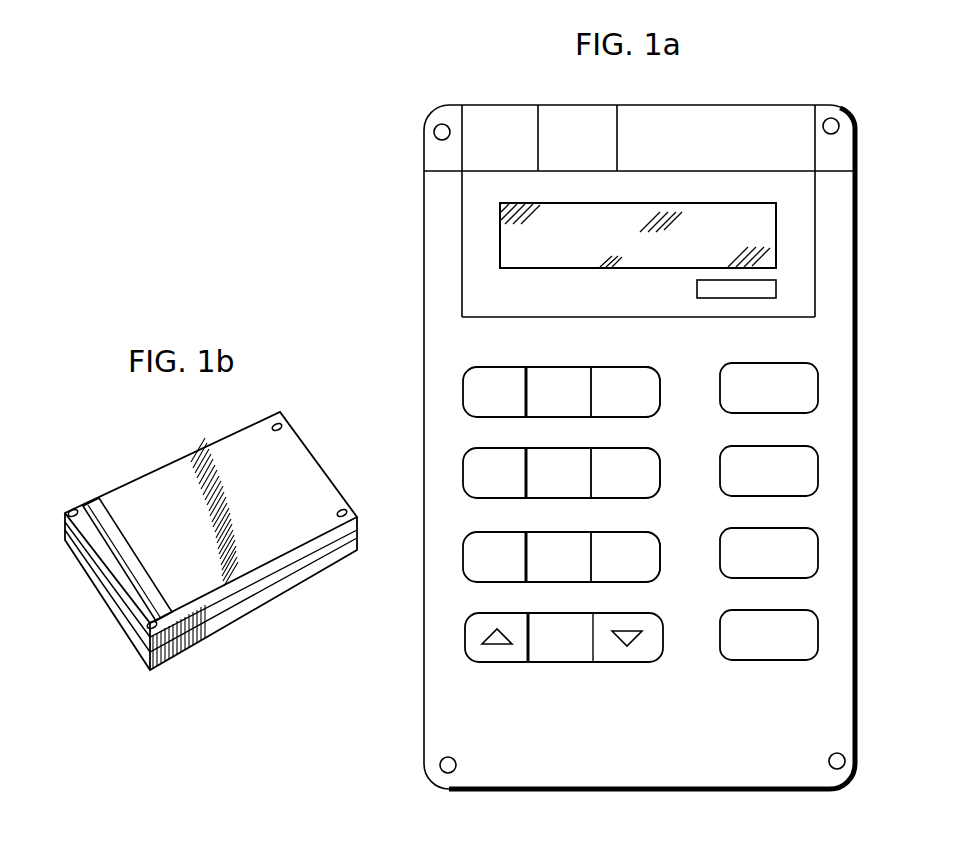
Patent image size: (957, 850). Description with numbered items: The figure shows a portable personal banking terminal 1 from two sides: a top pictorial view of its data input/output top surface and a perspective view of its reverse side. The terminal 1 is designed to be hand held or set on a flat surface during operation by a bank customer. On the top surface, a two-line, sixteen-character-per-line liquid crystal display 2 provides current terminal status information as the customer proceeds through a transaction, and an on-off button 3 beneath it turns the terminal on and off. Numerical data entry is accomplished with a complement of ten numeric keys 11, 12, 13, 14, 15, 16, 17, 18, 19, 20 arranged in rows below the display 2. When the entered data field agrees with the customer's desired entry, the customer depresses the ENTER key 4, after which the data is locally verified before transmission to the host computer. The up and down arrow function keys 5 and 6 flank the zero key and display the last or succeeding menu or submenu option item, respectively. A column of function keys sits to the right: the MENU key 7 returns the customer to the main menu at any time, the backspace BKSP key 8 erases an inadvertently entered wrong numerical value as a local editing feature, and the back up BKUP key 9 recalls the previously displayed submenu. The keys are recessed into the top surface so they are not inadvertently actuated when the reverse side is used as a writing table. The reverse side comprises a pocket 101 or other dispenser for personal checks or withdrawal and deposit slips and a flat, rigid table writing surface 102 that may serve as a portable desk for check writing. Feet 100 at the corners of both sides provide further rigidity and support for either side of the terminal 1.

In FIG. 1A, the portable personal banking terminal 1 is at (423, 335).
In FIG. 1A, the liquid crystal display 2 is at (777, 232).
In FIG. 1A, the on-off button 3 is at (777, 289).
In FIG. 1A, the ENTER key 4 is at (819, 633).
In FIG. 1A, the up arrow function key 5 is at (508, 662).
In FIG. 1A, the down arrow function key 6 is at (612, 662).
In FIG. 1A, the MENU key 7 is at (819, 386).
In FIG. 1A, the backspace BKSP key 8 is at (819, 553).
In FIG. 1A, the back up BKUP key 9 is at (819, 470).
In FIG. 1A, the numeric key 11 is at (510, 367).
In FIG. 1A, the numeric key 12 is at (552, 367).
In FIG. 1A, the numeric key 13 is at (618, 367).
In FIG. 1A, the numeric key 14 is at (478, 448).
In FIG. 1A, the numeric key 15 is at (540, 448).
In FIG. 1A, the numeric key 16 is at (608, 448).
In FIG. 1A, the numeric key 17 is at (513, 532).
In FIG. 1A, the numeric key 18 is at (543, 532).
In FIG. 1A, the numeric key 19 is at (620, 532).
In FIG. 1A, the numeric key 20 is at (554, 613).
In FIG. 1A, the feet 100 is at (435, 135).
In FIG. 1B, the feet 100 is at (282, 425).
In FIG. 1B, the pocket 101 is at (84, 506).
In FIG. 1B, the rigid table writing surface 102 is at (247, 563).